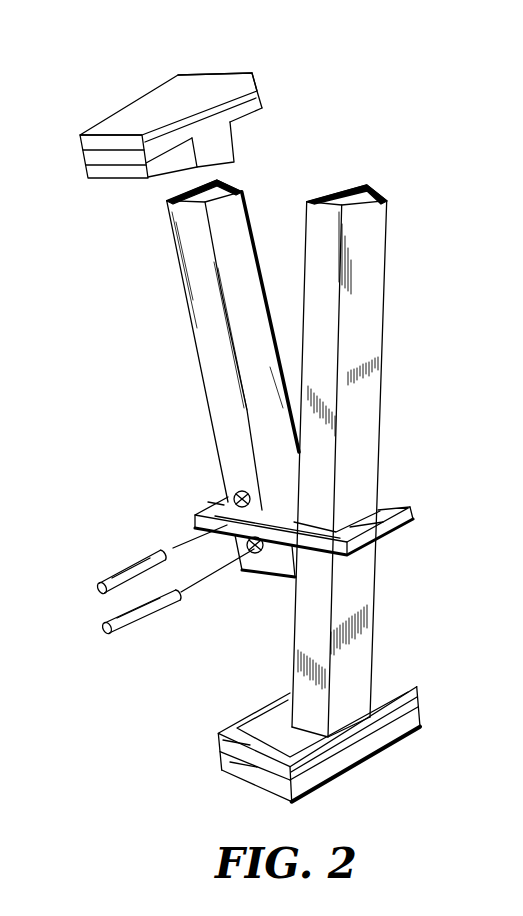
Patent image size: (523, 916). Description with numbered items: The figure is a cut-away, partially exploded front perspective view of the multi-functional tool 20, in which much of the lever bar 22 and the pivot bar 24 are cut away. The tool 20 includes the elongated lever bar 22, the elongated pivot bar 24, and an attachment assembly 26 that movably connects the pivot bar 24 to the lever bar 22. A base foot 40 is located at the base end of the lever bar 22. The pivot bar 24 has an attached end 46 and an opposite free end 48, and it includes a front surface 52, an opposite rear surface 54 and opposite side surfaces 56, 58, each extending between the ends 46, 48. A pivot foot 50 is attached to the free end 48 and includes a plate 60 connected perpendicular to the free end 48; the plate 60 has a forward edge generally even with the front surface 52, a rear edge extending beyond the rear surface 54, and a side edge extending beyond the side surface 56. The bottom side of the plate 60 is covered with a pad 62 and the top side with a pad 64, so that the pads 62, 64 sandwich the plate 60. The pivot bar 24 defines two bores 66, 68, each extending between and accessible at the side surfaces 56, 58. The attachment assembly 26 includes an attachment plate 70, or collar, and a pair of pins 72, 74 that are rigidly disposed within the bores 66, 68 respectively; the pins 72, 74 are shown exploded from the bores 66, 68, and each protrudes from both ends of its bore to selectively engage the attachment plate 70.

The multi-functional tool 20 is at (130, 713).
The lever bar 22 is at (397, 279).
The pivot bar 24 is at (175, 260).
The attachment assembly 26 is at (136, 533).
The base foot 40 is at (386, 754).
The attached end 46 is at (280, 577).
The free end 48 is at (230, 134).
The pivot foot 50 is at (124, 99).
The front surface 52 is at (233, 237).
The rear surface 54 is at (178, 190).
The side surface 56 is at (217, 350).
The side surface 58 is at (229, 187).
The plate 60 is at (80, 160).
The pad 62 is at (263, 105).
The pad 64 is at (215, 72).
The bore 66 is at (243, 491).
The bore 68 is at (255, 573).
The attachment plate 70 is at (416, 538).
The pin 72 is at (97, 584).
The pin 74 is at (105, 631).